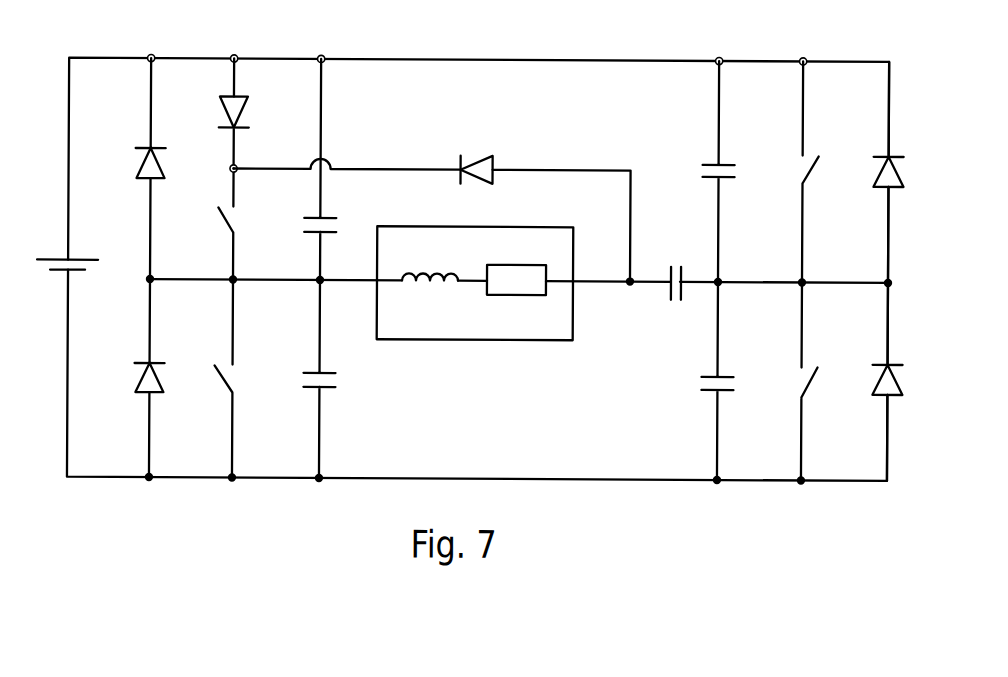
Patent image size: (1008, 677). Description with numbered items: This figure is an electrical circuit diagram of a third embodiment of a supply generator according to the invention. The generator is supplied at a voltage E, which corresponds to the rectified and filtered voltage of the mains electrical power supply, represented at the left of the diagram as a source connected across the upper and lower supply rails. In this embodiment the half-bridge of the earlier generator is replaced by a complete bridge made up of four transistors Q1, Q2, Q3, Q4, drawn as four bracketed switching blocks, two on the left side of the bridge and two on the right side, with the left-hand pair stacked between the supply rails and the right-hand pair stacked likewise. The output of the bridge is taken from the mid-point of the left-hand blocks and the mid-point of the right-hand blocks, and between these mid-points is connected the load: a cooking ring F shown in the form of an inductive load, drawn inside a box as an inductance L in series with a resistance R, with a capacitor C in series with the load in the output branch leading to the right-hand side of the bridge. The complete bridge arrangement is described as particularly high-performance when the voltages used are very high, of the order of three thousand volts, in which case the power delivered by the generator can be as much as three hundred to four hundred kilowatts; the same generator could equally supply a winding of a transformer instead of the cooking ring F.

The supply voltage E is at (58, 268).
The transistor Q1 is at (318, 491).
The transistor Q2 is at (323, 47).
The transistor Q3 is at (887, 496).
The transistor Q4 is at (880, 48).
The cooking ring F is at (474, 326).
The inductance of the inductive load L is at (430, 257).
The resistance of the inductive load R is at (516, 265).
The capacitor C is at (676, 267).